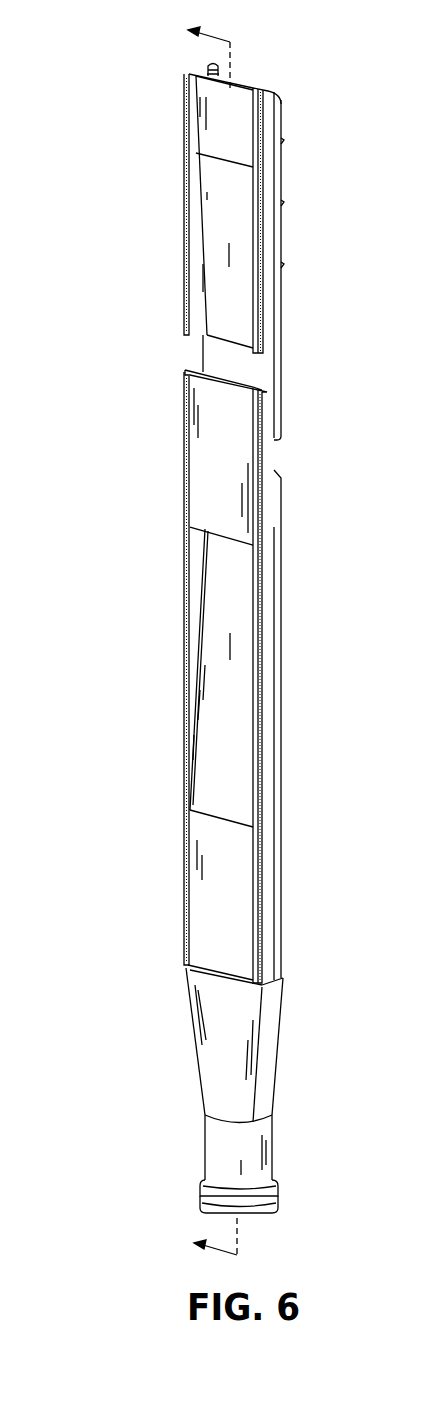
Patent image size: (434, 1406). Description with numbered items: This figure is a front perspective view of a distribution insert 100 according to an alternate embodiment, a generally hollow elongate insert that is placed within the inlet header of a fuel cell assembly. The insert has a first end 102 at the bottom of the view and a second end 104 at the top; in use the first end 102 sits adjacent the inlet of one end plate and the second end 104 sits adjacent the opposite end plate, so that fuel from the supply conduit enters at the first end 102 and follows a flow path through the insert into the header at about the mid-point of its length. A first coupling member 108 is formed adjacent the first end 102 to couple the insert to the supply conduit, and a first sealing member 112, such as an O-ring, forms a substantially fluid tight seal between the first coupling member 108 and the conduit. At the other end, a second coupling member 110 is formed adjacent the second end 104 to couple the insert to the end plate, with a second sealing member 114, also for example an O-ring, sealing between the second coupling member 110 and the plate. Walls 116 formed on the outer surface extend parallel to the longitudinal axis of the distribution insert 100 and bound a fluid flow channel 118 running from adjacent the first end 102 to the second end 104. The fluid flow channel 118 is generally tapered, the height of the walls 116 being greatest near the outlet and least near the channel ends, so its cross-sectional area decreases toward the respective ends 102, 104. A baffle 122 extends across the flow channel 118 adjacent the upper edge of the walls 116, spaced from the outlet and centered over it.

The distribution insert 100 is at (103, 347).
The first end 102 is at (205, 1150).
The second end 104 is at (266, 88).
The first coupling member 108 is at (278, 1205).
The second coupling member 110 is at (205, 66).
The first sealing member 112 is at (200, 1188).
The second sealing member 114 is at (204, 71).
The walls 116 is at (184, 252).
The fluid flow channel 118 is at (222, 288).
The baffle 122 is at (215, 458).